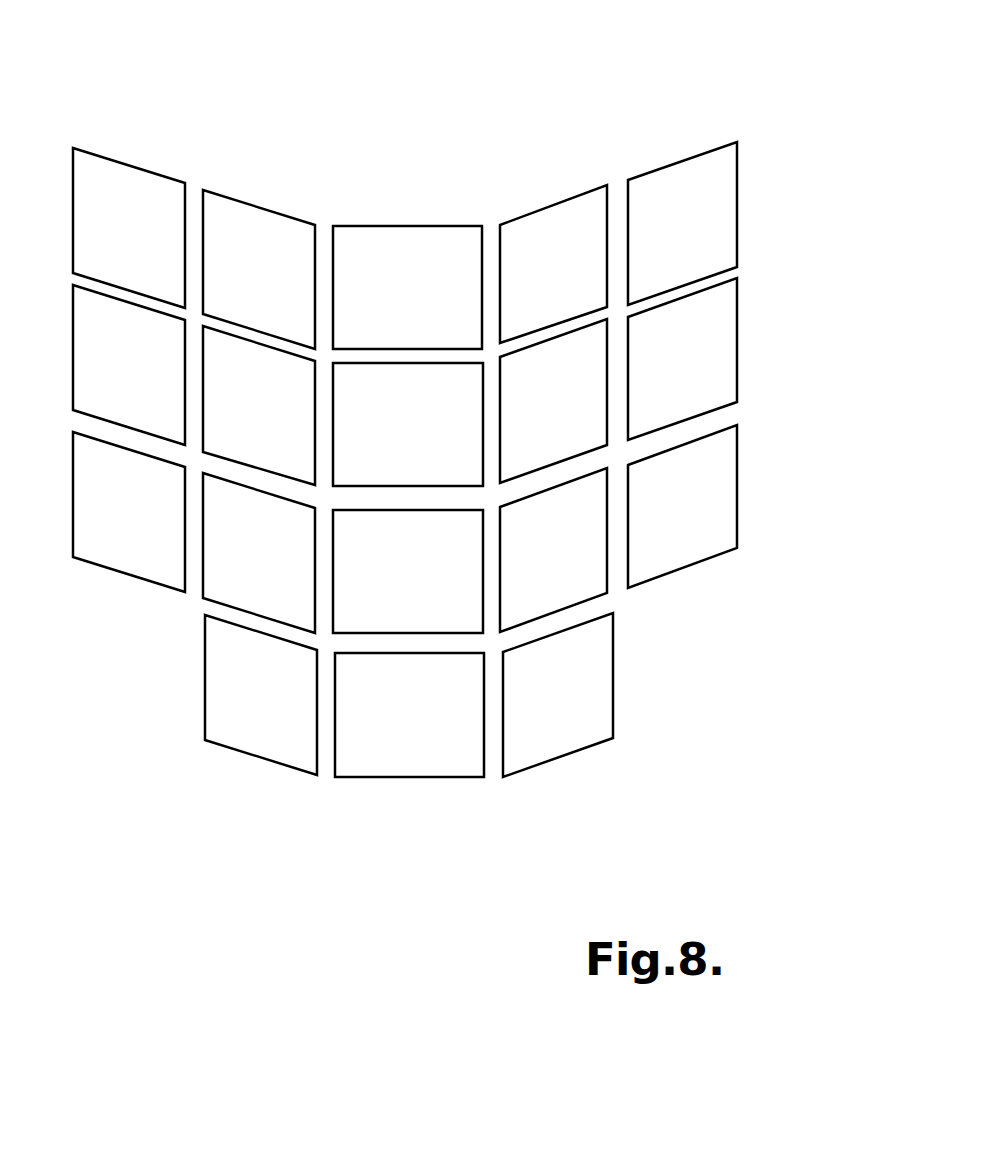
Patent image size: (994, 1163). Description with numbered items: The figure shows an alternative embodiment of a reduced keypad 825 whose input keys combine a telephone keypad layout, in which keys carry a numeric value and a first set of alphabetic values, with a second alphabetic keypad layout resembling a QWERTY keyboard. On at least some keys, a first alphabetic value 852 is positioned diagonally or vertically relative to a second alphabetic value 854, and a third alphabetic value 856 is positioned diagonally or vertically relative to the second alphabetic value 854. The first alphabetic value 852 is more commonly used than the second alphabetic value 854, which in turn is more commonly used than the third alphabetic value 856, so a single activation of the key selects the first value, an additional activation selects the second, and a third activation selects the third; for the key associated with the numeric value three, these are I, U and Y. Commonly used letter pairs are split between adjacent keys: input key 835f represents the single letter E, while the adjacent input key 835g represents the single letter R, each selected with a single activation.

The reduced keypad 825 is at (620, 80).
The input key 835f is at (218, 207).
The input key 835g is at (348, 238).
The first alphabetic value 852 is at (590, 226).
The second alphabetic value 854 is at (543, 237).
The third alphabetic value 856 is at (517, 260).